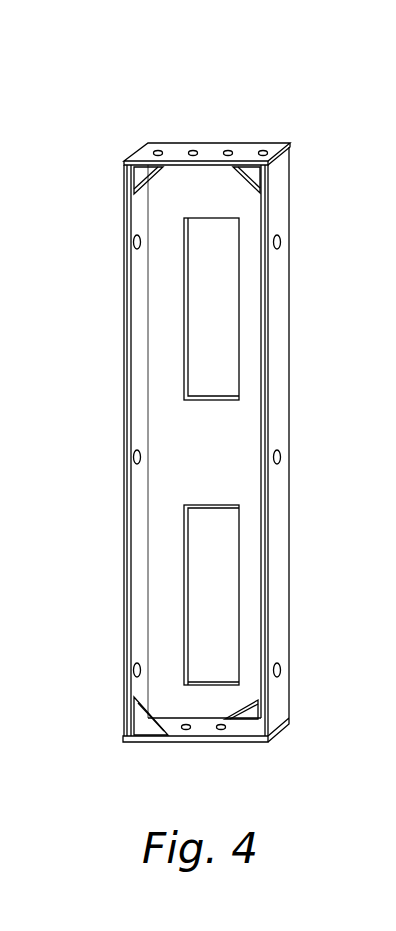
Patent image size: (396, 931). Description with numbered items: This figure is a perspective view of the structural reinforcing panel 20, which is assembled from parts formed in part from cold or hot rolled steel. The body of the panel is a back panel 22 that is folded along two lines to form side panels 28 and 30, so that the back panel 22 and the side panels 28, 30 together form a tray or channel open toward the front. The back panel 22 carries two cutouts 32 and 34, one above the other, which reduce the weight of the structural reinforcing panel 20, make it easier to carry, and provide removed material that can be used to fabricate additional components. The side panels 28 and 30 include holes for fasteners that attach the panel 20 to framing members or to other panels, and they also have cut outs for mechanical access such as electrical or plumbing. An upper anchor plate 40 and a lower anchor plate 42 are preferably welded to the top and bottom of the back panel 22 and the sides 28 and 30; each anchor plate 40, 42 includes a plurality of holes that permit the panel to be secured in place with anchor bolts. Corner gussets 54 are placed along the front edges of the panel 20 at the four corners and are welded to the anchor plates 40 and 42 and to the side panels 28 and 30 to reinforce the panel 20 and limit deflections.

The structural reinforcing panel 20 is at (263, 90).
The back panel 22 is at (163, 216).
The side panel 28 is at (279, 512).
The side panel 30 is at (137, 344).
The cutout 32 is at (230, 327).
The cutout 34 is at (232, 557).
The upper anchor plate 40 is at (210, 148).
The lower anchor plate 42 is at (163, 742).
The corner gussets 54 is at (133, 711).